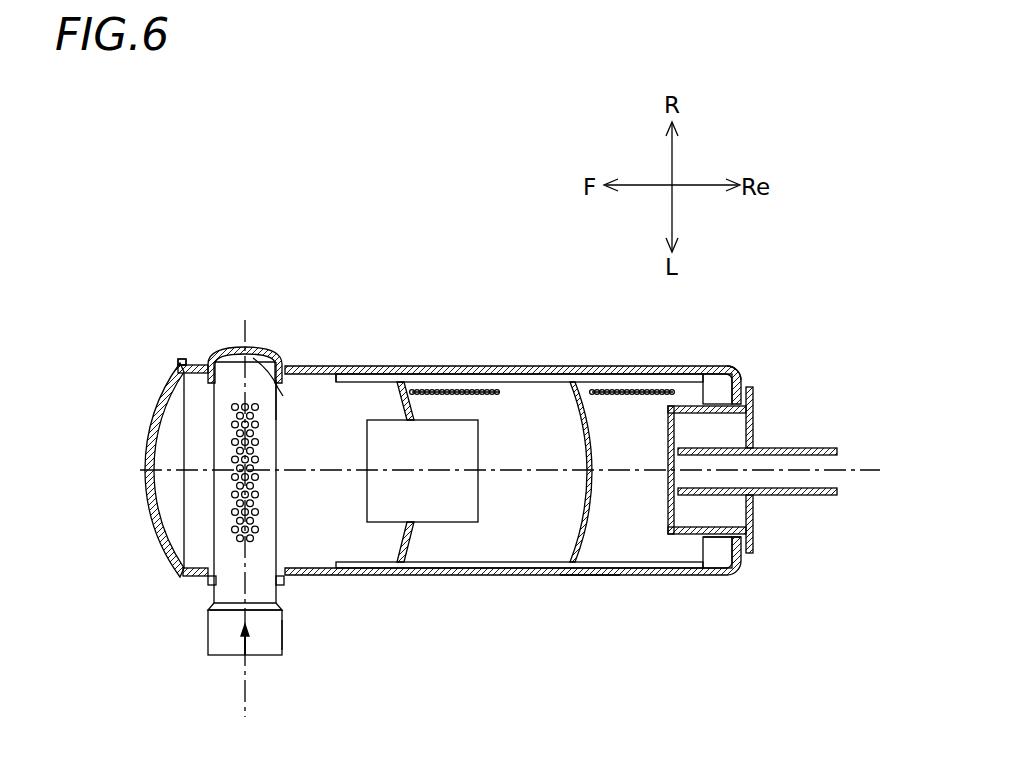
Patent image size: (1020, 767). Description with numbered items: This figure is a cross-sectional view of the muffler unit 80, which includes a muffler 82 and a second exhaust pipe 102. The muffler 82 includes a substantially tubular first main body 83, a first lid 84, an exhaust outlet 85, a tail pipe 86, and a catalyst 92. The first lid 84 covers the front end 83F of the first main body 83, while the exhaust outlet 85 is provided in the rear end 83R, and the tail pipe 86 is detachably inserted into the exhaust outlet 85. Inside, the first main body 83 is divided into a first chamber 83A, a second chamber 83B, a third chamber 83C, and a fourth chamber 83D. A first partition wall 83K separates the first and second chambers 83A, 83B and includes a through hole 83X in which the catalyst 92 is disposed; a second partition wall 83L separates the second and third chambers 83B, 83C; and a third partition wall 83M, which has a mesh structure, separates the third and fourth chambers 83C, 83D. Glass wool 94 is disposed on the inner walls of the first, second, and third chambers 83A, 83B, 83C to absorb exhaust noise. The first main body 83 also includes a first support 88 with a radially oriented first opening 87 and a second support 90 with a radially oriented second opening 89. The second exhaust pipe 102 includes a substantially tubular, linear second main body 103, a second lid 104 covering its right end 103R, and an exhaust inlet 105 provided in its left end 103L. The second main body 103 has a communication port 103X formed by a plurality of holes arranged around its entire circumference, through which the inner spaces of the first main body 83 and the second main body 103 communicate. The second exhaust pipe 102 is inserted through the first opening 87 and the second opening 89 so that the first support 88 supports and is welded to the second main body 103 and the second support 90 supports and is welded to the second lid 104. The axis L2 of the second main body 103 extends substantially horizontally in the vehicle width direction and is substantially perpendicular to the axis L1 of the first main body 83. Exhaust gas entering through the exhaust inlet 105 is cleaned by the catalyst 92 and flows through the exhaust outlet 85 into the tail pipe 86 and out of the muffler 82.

The muffler unit 80 is at (735, 320).
The muffler 82 is at (589, 578).
The first main body 83 is at (445, 572).
The first chamber 83A is at (333, 412).
The second chamber 83B is at (541, 423).
The third chamber 83C is at (633, 453).
The fourth chamber 83D is at (713, 434).
The front end 83F is at (176, 378).
The first partition wall 83K is at (425, 390).
The second partition wall 83L is at (572, 385).
The third partition wall 83M is at (687, 538).
The rear end 83R is at (742, 383).
The through hole 83X is at (410, 423).
The first lid 84 is at (148, 483).
The exhaust outlet 85 is at (742, 413).
The tail pipe 86 is at (800, 498).
The first opening 87 is at (265, 578).
The first support 88 is at (207, 581).
The second opening 89 is at (273, 348).
The second support 90 is at (206, 362).
The catalyst 92 is at (396, 500).
The glass wool 94 is at (493, 366).
The second exhaust pipe 102 is at (205, 634).
The second main body 103 is at (212, 527).
The left end 103L is at (270, 648).
The right end 103R is at (284, 397).
The communication port 103X is at (230, 448).
The second lid 104 is at (240, 350).
The exhaust inlet 105 is at (258, 657).
The axis of the first main body L1 is at (858, 470).
The axis of the second main body L2 is at (245, 680).